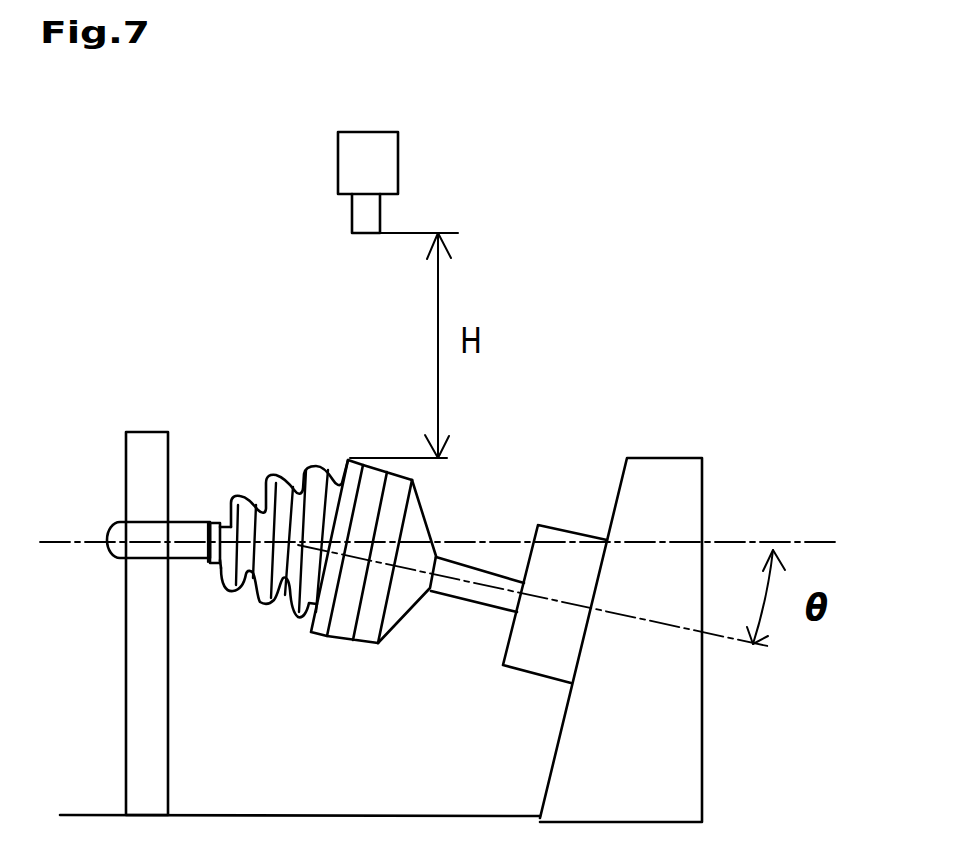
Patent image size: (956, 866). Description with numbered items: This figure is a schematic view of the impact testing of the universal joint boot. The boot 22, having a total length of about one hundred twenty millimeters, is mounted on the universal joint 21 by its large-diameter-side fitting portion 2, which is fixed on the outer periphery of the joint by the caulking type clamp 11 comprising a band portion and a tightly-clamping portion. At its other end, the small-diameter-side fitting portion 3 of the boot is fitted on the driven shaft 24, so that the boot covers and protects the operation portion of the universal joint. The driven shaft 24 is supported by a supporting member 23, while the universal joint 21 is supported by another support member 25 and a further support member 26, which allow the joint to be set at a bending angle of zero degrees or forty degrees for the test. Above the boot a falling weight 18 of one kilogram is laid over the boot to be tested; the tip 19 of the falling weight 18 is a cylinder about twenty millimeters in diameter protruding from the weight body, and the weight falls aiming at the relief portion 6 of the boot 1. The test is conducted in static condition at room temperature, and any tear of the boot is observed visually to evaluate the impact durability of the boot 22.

The boot 1 is at (283, 527).
The large-diameter-side fitting portion 2 is at (363, 603).
The small-diameter-side fitting portion 3 is at (218, 567).
The relief portion 6 is at (350, 459).
The caulking type clamp 11 is at (323, 640).
The falling weight 18 is at (418, 160).
The tip of the falling weight 19 is at (368, 213).
The universal joint 21 is at (373, 593).
The boot 22 is at (268, 626).
The supporting member 23 is at (143, 643).
The driven shaft 24 is at (128, 552).
The support member 25 is at (557, 648).
The support member 26 is at (663, 753).